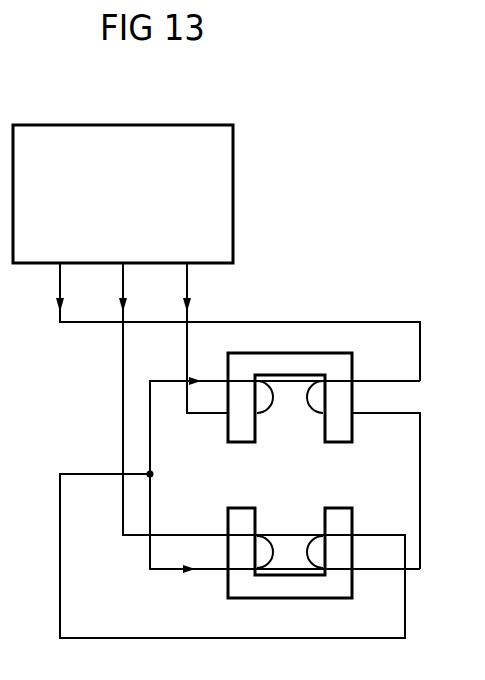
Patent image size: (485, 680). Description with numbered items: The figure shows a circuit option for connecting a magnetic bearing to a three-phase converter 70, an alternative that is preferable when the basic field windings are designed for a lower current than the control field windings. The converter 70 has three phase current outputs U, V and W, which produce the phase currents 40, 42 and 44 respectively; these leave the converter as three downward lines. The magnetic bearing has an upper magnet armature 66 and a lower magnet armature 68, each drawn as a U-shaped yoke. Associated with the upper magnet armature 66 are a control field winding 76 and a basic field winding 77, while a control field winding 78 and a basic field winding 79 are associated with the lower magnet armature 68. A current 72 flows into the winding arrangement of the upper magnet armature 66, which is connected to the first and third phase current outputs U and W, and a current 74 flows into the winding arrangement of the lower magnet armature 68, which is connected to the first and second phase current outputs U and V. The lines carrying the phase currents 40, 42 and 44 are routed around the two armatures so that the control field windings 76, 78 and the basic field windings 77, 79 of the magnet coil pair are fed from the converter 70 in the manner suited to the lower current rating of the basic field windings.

The three-phase converter 70 is at (190, 123).
The phase current 40 is at (60, 291).
The phase current 42 is at (123, 351).
The phase current 44 is at (188, 290).
The current 72 is at (205, 380).
The current 74 is at (207, 572).
The upper magnet armature 66 is at (321, 412).
The lower magnet armature 68 is at (321, 538).
The control field winding 76 is at (268, 418).
The basic field winding 77 is at (318, 417).
The control field winding 78 is at (272, 531).
The basic field winding 79 is at (321, 531).